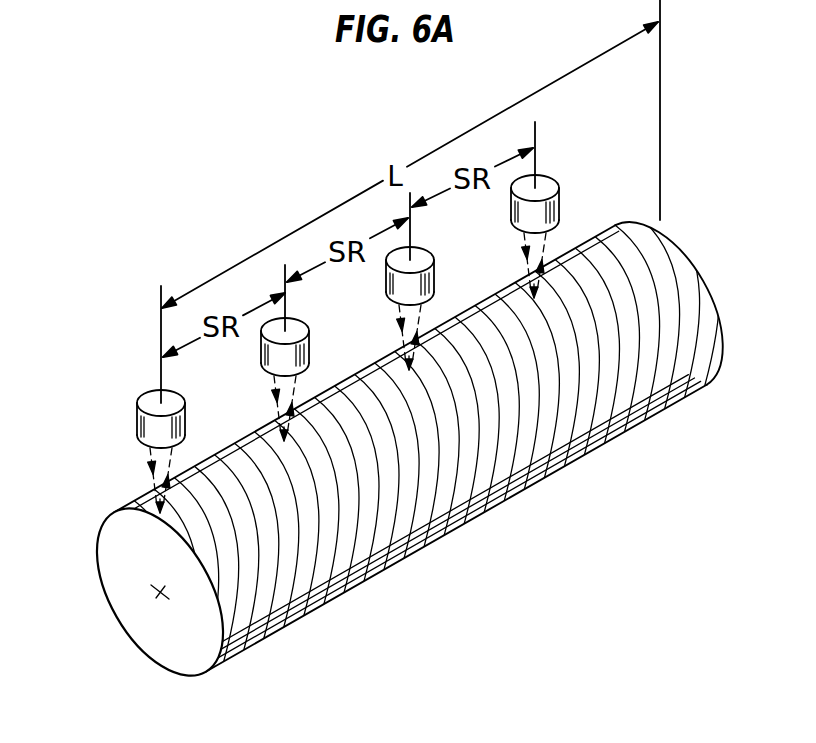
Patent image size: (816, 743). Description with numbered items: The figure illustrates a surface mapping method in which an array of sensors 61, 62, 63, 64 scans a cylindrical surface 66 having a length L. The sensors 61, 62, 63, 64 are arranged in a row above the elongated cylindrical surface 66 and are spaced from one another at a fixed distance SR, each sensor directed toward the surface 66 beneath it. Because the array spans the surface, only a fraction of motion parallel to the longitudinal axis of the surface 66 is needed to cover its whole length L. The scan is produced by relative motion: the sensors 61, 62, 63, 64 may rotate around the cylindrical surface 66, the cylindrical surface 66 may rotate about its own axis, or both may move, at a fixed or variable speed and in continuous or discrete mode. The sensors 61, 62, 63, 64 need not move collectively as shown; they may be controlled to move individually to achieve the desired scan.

The sensor 61 is at (185, 416).
The sensor 62 is at (308, 347).
The sensor 63 is at (434, 276).
The sensor 64 is at (559, 204).
The cylindrical surface 66 is at (104, 524).